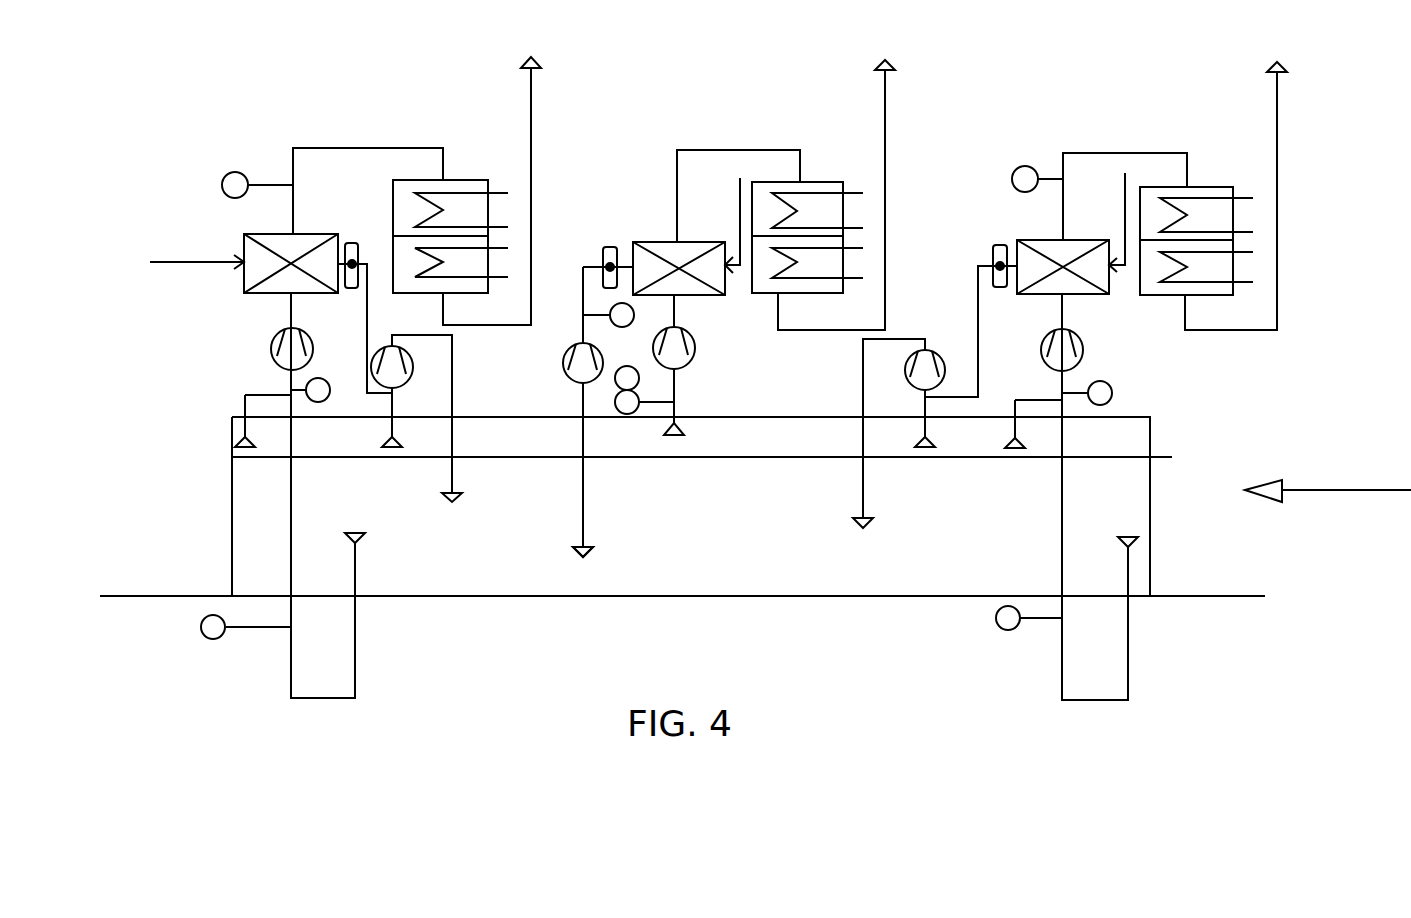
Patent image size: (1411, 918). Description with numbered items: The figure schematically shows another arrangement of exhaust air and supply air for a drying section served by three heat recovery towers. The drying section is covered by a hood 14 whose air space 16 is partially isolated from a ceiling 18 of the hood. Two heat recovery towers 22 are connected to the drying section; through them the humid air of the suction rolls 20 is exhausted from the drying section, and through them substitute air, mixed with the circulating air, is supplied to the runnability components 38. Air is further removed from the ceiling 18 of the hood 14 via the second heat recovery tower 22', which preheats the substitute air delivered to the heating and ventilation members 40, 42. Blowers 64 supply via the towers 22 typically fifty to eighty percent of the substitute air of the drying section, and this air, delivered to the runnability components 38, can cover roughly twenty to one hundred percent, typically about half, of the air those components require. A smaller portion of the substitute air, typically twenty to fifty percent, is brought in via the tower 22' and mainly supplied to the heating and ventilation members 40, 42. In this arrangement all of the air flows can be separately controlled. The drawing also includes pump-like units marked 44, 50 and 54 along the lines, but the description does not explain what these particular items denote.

The hood 14 is at (1150, 438).
The air space 16 is at (762, 531).
The ceiling 18 is at (1127, 430).
The suction rolls 20 is at (363, 540).
The heat recovery tower 22 is at (718, 361).
The second heat recovery tower 22' is at (699, 340).
The runnability components 38 is at (458, 503).
The heating and ventilation member 40 is at (590, 556).
The heating and ventilation member 42 is at (583, 552).
The pump 44 is at (678, 354).
The pump 50 is at (278, 352).
The pump 54 is at (566, 366).
The blowers 64 is at (910, 376).